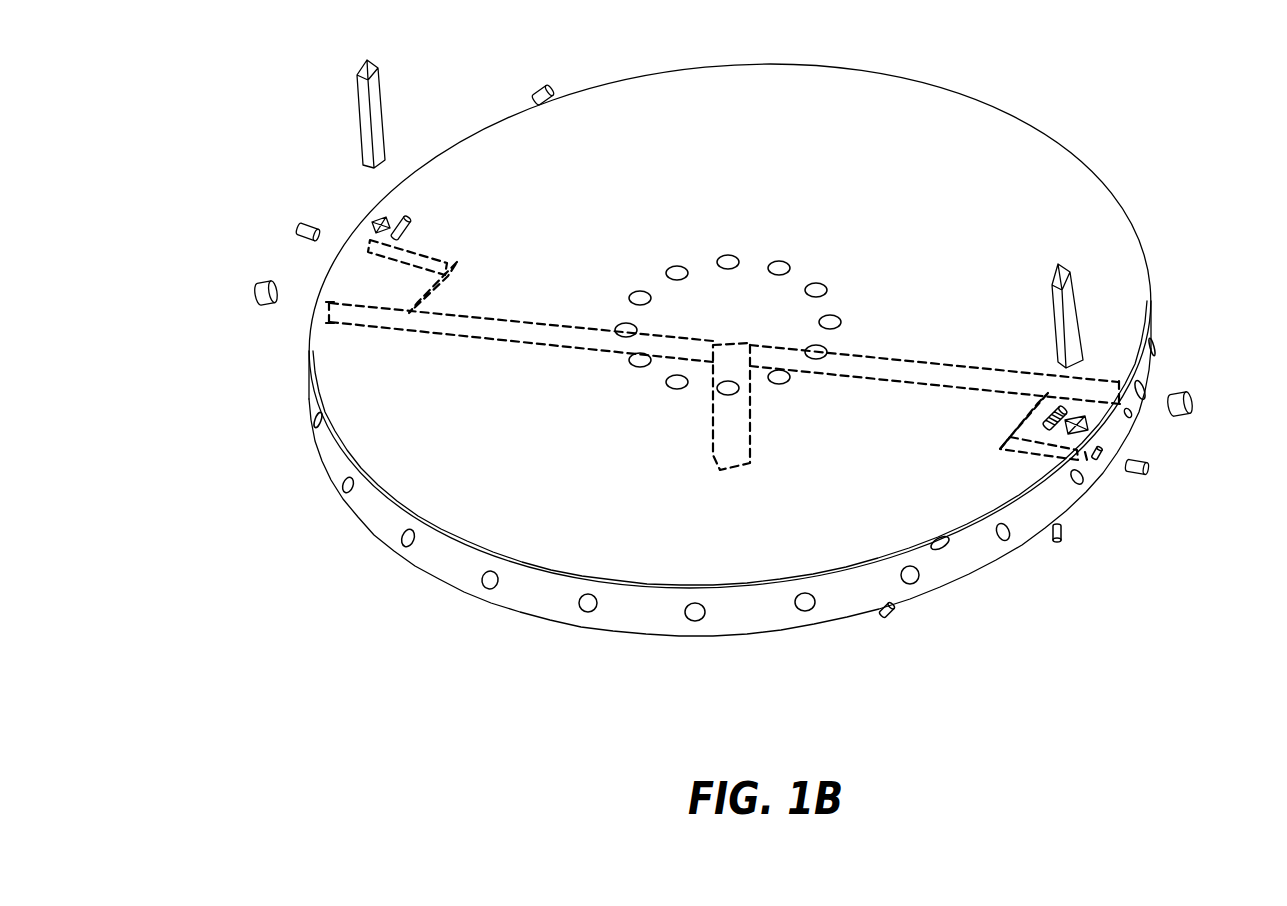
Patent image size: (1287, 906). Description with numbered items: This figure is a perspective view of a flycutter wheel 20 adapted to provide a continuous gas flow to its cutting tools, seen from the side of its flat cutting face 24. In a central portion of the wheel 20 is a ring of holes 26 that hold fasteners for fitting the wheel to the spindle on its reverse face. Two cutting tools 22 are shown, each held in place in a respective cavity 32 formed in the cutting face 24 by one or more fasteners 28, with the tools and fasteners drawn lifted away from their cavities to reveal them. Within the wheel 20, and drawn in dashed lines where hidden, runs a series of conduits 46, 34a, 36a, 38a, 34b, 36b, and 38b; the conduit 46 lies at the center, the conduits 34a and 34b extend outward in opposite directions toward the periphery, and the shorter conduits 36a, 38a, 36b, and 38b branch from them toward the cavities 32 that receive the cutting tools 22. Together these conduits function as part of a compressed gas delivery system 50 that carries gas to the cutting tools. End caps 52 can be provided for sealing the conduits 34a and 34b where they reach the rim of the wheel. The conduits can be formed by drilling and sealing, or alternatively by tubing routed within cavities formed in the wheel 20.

The flycutter wheel 20 is at (1192, 653).
The cutting tool 22 is at (357, 80).
The flat cutting face 24 is at (928, 100).
The holes 26 is at (718, 264).
The fastener 28 is at (298, 226).
The cavity 32 is at (378, 218).
The conduit 34a is at (557, 345).
The conduit 34b is at (947, 360).
The conduit 36a is at (456, 270).
The conduit 36b is at (1022, 415).
The conduit 38a is at (436, 258).
The conduit 38b is at (1099, 456).
The conduit 46 is at (716, 464).
The compressed gas delivery system 50 is at (866, 322).
The end cap 52 is at (258, 306).